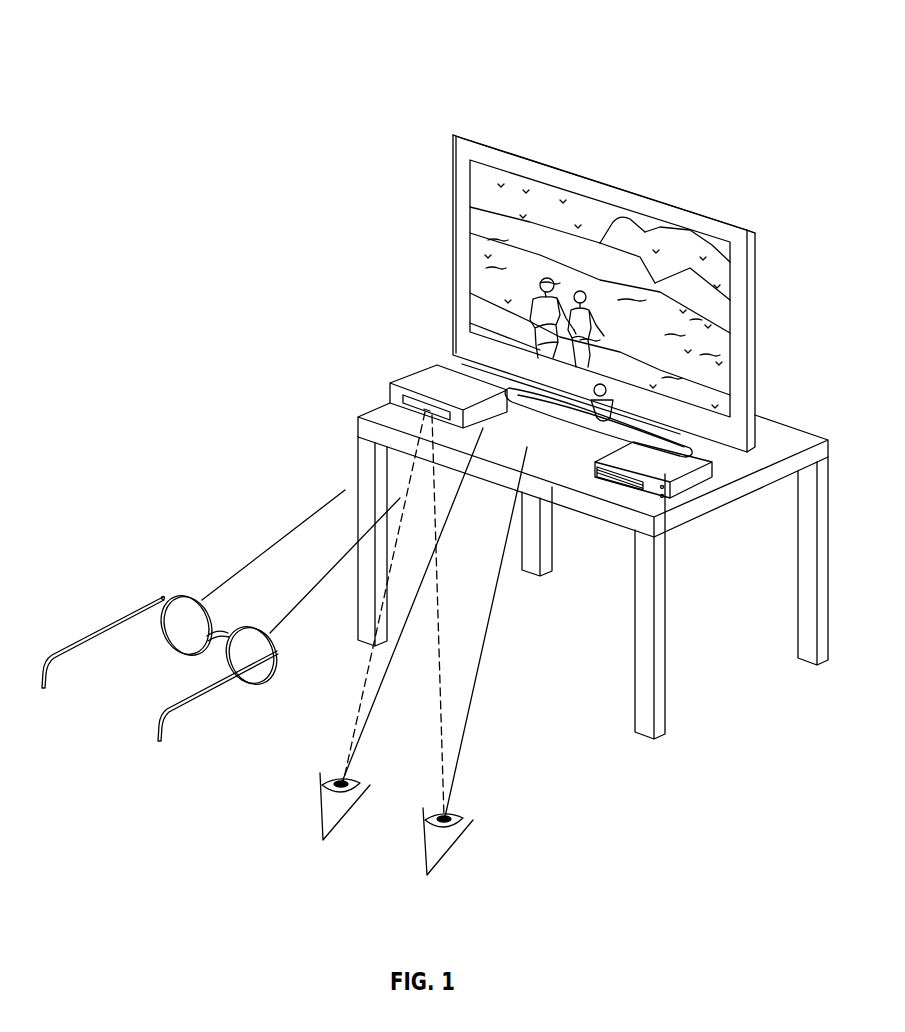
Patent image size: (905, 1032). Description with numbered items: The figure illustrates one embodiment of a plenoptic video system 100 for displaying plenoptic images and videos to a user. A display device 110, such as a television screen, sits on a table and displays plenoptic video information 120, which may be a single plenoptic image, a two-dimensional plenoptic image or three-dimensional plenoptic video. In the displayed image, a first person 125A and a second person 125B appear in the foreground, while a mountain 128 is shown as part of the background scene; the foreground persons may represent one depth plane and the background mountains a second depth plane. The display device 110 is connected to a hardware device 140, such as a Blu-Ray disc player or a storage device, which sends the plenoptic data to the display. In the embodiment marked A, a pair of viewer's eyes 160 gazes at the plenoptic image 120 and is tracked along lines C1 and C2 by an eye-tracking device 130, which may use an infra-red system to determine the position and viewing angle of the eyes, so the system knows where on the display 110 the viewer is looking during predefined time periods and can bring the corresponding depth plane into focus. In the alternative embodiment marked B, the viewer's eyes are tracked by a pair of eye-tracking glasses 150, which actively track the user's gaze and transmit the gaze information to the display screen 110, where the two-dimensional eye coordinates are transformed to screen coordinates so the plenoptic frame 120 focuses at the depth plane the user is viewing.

The plenoptic video system 100 is at (226, 56).
The display device 110 is at (742, 225).
The plenoptic video information 120 is at (483, 232).
The first person 125A is at (581, 292).
The second person 125B is at (546, 278).
The mountain 128 is at (673, 240).
The eye-tracking device 130 is at (417, 377).
The hardware device 140 is at (680, 487).
The eye-tracking glasses 150 is at (140, 605).
The viewer's eyes 160 is at (450, 847).
The tracking line C1 is at (437, 588).
The tracking line C2 is at (362, 705).
The infra-red eye-tracking embodiment A is at (353, 833).
The glasses eye-tracking embodiment B is at (89, 725).